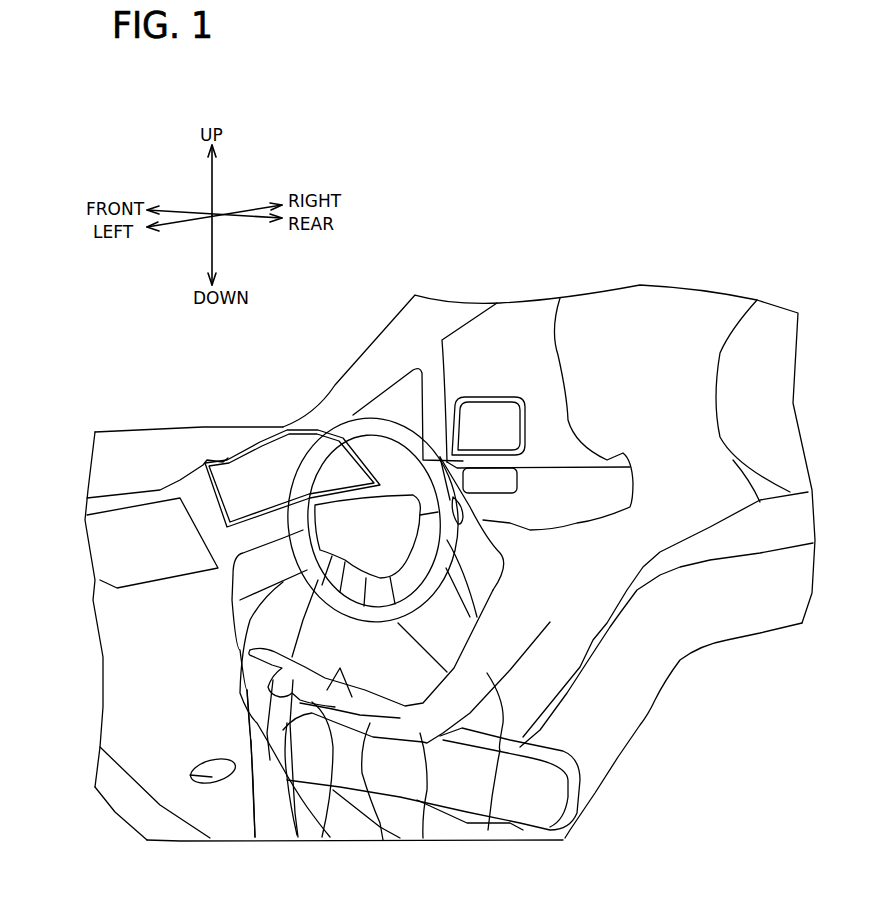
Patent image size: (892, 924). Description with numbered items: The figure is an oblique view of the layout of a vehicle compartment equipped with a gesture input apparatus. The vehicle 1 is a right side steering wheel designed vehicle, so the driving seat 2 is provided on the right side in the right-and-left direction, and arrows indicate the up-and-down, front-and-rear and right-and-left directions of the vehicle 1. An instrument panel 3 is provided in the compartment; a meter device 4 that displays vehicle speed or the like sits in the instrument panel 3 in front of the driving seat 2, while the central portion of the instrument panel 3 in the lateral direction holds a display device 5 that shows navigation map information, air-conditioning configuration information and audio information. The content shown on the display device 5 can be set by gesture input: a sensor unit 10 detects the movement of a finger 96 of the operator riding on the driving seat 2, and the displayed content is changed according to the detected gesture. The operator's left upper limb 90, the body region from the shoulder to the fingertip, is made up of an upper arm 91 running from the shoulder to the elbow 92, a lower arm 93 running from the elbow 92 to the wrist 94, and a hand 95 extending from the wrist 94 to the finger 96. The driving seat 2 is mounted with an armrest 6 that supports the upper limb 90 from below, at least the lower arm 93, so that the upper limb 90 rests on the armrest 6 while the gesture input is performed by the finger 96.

The vehicle 1 is at (383, 316).
The driving seat 2 is at (733, 622).
The instrument panel 3 is at (133, 632).
The meter device 4 is at (260, 463).
The display device 5 is at (132, 535).
The armrest 6 is at (505, 482).
The sensor unit 10 is at (192, 773).
The upper limb 90 is at (516, 647).
The upper arm 91 is at (488, 800).
The elbow 92 is at (420, 800).
The lower arm 93 is at (380, 800).
The wrist 94 is at (323, 800).
The hand 95 is at (297, 800).
The finger 96 is at (253, 800).